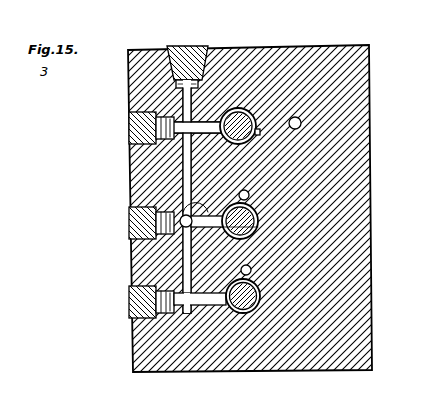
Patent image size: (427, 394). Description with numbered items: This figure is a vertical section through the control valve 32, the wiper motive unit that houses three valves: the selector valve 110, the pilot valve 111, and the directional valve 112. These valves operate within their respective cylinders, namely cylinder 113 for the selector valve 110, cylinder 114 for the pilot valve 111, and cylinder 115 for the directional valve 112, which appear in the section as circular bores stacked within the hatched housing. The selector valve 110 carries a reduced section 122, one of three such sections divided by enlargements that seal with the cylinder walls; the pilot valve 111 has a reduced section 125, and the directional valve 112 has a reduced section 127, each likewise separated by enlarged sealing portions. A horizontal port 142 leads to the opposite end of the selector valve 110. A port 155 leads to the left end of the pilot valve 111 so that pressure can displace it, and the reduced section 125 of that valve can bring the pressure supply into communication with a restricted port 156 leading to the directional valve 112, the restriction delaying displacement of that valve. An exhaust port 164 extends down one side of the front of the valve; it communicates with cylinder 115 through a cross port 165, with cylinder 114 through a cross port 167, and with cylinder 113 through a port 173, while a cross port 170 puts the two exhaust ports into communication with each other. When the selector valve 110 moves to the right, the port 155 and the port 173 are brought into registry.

The control valve 32 is at (346, 37).
The selector valve 110 is at (231, 99).
The pilot valve 111 is at (250, 212).
The directional valve 112 is at (253, 288).
The cylinder 113 is at (224, 101).
The cylinder 114 is at (252, 222).
The cylinder 115 is at (240, 303).
The reduced section 122 is at (252, 124).
The reduced section 125 is at (362, 189).
The reduced section 127 is at (247, 302).
The horizontal port 142 is at (293, 114).
The port 155 is at (241, 186).
The port 156 is at (243, 262).
The exhaust port 164 is at (176, 137).
The cross port 165 is at (198, 298).
The cross port 167 is at (173, 204).
The cross port 170 is at (162, 201).
The port 173 is at (147, 106).